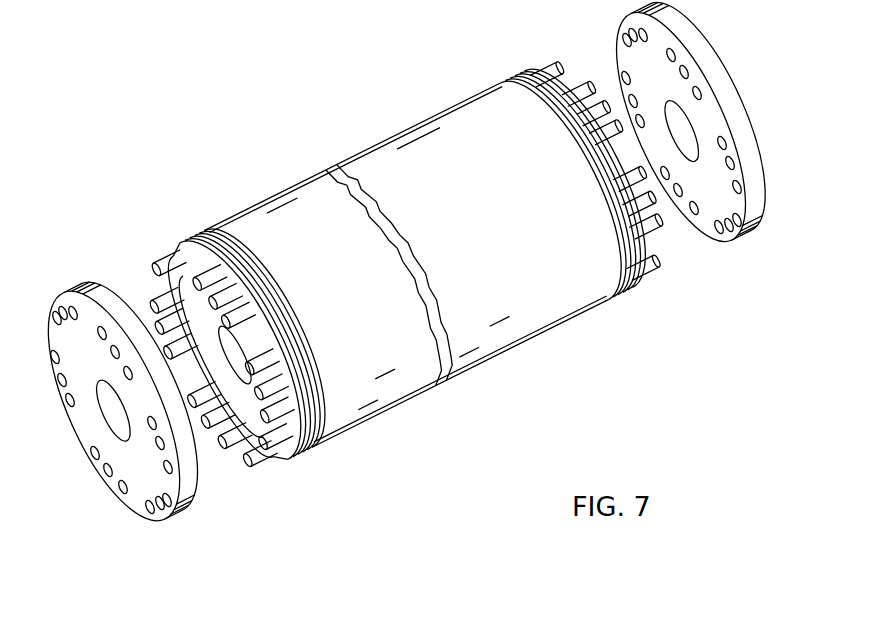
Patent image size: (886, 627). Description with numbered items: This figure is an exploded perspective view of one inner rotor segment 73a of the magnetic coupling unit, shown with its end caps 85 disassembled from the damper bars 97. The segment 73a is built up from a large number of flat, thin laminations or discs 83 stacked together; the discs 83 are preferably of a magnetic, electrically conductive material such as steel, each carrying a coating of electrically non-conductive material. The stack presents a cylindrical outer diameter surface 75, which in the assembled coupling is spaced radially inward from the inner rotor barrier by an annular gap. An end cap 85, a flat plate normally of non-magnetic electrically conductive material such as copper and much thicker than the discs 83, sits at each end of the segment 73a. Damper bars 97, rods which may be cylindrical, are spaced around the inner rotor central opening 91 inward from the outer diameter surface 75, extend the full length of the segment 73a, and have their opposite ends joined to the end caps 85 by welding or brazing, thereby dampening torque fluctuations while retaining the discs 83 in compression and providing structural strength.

The inner rotor segment 73a is at (546, 363).
The cylindrical outer diameter surface 75 is at (249, 212).
The laminations or discs 83 is at (200, 238).
The end cap 85 is at (183, 512).
The inner rotor central opening 91 is at (108, 418).
The damper bars 97 is at (268, 470).